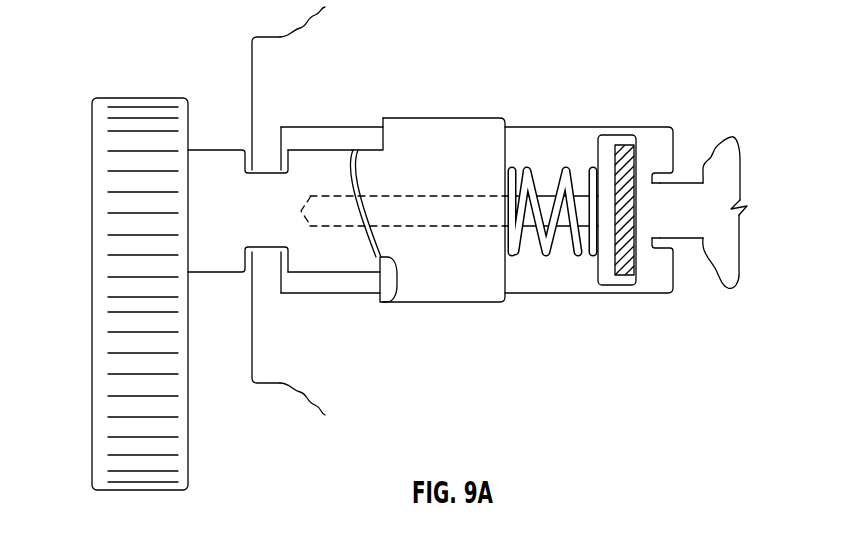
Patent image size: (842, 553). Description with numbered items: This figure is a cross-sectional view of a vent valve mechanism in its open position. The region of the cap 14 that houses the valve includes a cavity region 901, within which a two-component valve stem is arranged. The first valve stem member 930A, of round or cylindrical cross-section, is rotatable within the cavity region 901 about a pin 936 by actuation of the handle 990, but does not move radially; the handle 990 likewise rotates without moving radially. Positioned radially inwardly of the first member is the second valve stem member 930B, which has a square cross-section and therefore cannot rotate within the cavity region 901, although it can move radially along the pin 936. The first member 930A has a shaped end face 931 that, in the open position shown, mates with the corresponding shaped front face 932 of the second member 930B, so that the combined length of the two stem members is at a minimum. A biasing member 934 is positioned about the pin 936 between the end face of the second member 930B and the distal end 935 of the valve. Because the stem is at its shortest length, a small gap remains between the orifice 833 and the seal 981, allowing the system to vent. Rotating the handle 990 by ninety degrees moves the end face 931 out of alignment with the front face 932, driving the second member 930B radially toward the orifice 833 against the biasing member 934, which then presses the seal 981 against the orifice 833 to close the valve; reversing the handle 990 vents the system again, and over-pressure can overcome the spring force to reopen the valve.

The cap 14 is at (459, 41).
The handle 990 is at (105, 343).
The first valve stem member 930A is at (318, 257).
The second valve stem member 930B is at (458, 272).
The shaped end face 931 is at (383, 301).
The shaped front face 932 is at (352, 163).
The biasing member 934 is at (557, 233).
The pin 936 is at (553, 203).
The distal end of the valve 935 is at (605, 277).
The cavity region 901 is at (529, 128).
The seal 981 is at (637, 258).
The orifice 833 is at (720, 238).